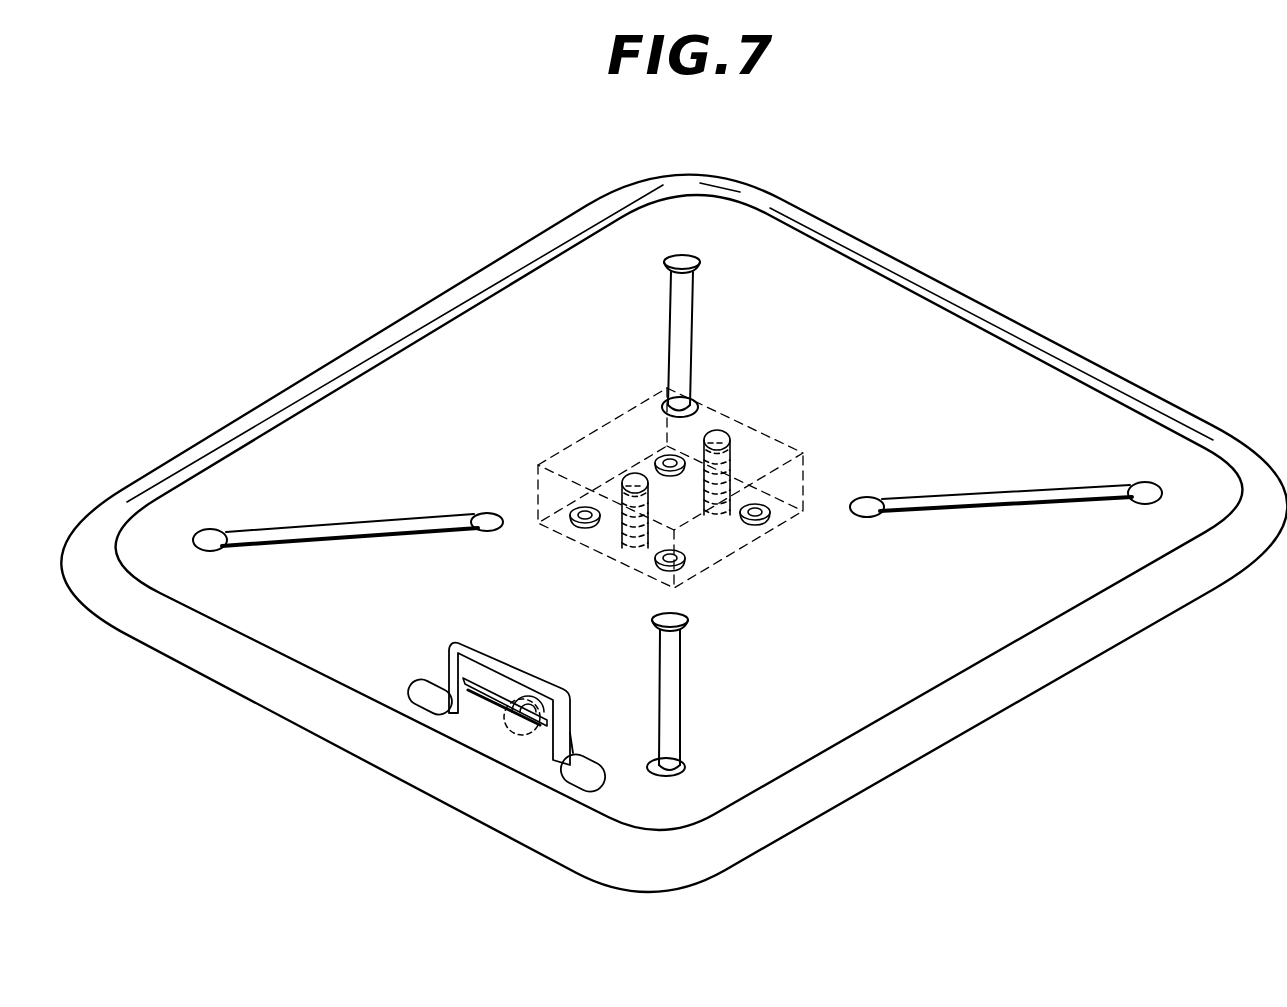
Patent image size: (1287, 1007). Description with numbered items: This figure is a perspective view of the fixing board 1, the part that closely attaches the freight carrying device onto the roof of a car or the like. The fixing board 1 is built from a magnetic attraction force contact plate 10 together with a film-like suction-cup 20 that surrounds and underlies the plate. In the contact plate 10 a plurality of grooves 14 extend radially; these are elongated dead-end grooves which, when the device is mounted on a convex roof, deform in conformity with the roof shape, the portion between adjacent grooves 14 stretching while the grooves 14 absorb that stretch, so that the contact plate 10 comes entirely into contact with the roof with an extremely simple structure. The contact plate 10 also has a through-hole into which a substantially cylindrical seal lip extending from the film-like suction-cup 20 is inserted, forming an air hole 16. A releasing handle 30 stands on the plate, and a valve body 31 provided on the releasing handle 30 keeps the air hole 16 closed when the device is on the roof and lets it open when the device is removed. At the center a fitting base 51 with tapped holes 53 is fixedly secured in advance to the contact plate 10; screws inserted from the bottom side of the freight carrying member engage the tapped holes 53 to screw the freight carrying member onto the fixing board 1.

The fixing board 1 is at (1030, 275).
The magnetic attraction force contact plate 10 is at (460, 378).
The grooves 14 is at (677, 338).
The air hole 16 is at (523, 697).
The film-like suction-cup 20 is at (907, 743).
The releasing handle 30 is at (470, 633).
The valve body 31 is at (490, 702).
The fitting base 51 is at (760, 447).
The tapped holes 53 is at (643, 537).